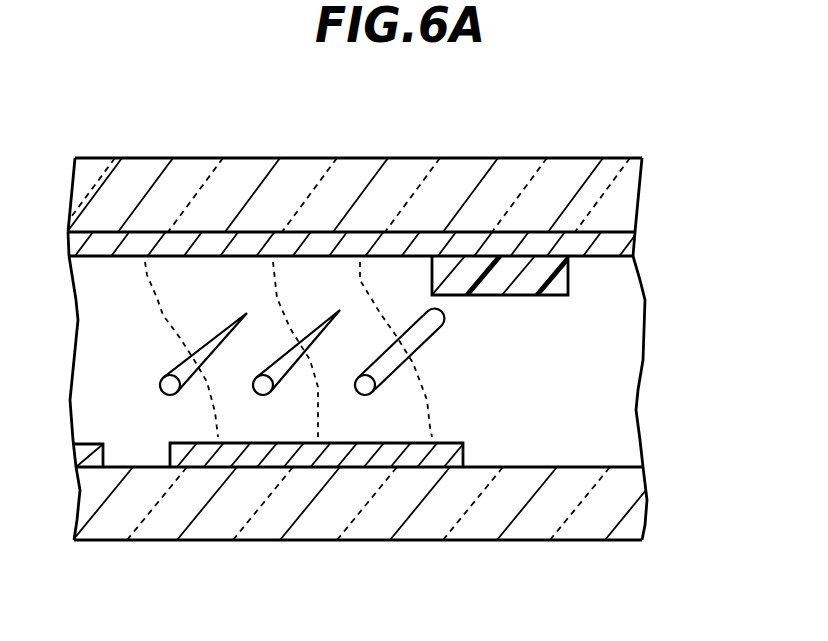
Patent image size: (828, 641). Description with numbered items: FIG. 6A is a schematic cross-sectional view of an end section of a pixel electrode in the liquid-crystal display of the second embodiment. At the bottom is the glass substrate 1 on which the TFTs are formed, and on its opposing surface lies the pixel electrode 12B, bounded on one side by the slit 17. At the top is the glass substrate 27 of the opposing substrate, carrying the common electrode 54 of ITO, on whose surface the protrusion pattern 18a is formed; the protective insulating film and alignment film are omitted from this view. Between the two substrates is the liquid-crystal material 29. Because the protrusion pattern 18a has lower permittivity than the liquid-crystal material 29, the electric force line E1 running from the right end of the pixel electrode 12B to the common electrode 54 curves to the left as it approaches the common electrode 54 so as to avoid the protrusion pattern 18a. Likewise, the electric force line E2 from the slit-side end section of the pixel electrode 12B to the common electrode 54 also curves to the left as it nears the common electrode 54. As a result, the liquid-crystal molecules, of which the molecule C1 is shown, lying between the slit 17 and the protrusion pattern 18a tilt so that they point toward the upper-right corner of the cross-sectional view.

The glass substrate 27 is at (632, 192).
The common electrode 54 is at (635, 242).
The protrusion pattern 18a is at (568, 283).
The liquid-crystal material 29 is at (627, 360).
The electric force line E2 is at (163, 315).
The electric force line E1 is at (427, 402).
The liquid crystal molecule C1 is at (422, 343).
The slit 17 is at (168, 452).
The pixel electrode 12B is at (250, 458).
The glass substrate 1 is at (640, 507).